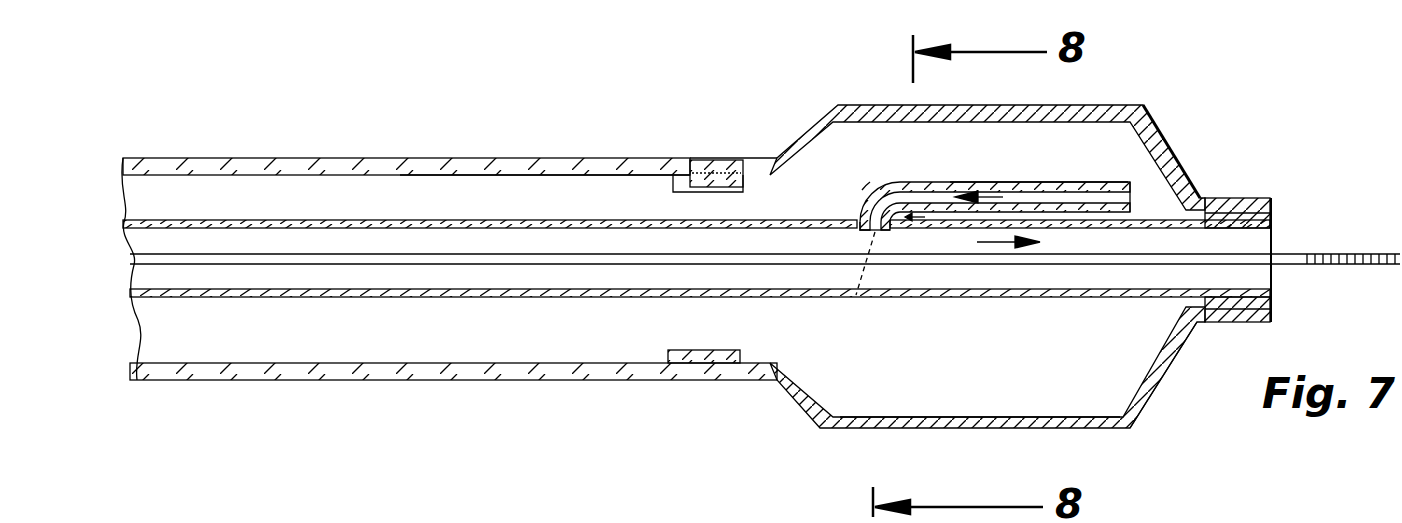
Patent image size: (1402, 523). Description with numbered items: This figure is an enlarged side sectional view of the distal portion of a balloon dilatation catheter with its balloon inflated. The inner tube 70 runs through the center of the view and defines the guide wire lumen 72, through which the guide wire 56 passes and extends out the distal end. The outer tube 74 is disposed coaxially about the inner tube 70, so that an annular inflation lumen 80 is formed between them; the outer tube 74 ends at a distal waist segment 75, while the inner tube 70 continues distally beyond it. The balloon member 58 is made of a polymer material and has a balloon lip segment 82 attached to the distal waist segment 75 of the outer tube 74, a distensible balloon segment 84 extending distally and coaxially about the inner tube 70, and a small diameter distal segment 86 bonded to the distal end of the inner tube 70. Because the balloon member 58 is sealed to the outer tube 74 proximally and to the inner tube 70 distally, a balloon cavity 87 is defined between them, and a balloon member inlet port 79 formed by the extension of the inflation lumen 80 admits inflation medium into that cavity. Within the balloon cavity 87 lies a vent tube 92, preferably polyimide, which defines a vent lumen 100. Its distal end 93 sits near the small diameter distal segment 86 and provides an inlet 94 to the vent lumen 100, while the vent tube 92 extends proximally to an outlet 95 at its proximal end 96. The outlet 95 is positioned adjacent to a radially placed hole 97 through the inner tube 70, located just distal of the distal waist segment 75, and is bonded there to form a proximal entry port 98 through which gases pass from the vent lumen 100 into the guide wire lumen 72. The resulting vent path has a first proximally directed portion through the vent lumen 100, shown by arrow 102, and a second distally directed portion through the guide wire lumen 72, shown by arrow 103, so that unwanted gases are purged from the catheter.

The guide wire 56 is at (1318, 268).
The balloon member 58 is at (983, 428).
The inner tube 70 is at (342, 300).
The guide wire lumen 72 is at (338, 242).
The outer tube 74 is at (176, 160).
The distal waist segment 75 is at (720, 180).
The balloon member inlet port 79 is at (700, 208).
The inflation lumen 80 is at (505, 190).
The balloon lip segment 82 is at (716, 376).
The distensible balloon segment 84 is at (1100, 430).
The small diameter distal segment 86 is at (1242, 200).
The balloon cavity 87 is at (1050, 390).
The vent tube 92 is at (1098, 185).
The distal end 93 is at (1133, 190).
The inlet 94 is at (1165, 205).
The outlet 95 is at (857, 221).
The proximal end 96 is at (879, 181).
The radially placed hole 97 is at (855, 298).
The proximal entry port 98 is at (890, 240).
The vent lumen 100 is at (1040, 192).
The arrow 102 is at (985, 190).
The arrow 103 is at (1000, 246).